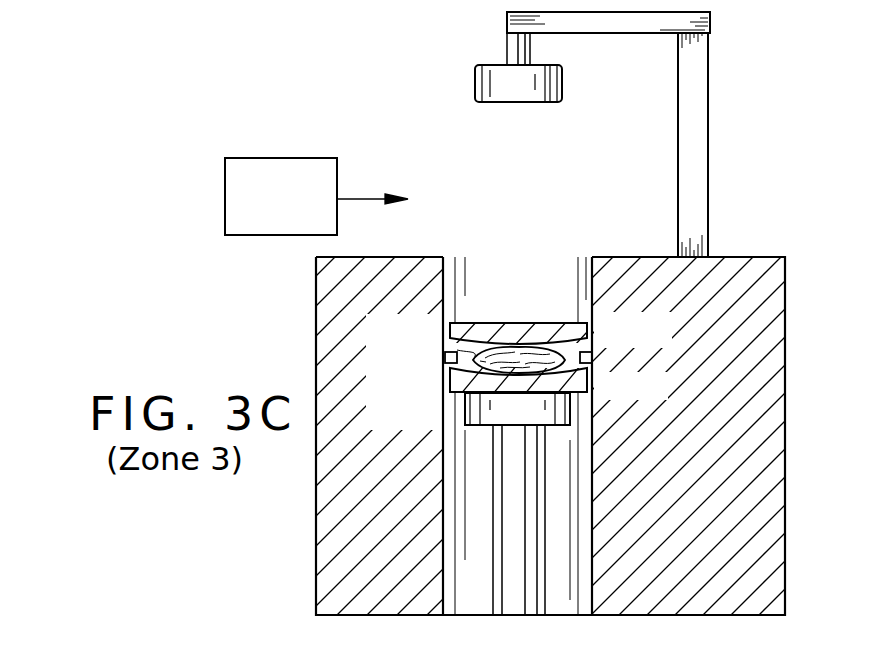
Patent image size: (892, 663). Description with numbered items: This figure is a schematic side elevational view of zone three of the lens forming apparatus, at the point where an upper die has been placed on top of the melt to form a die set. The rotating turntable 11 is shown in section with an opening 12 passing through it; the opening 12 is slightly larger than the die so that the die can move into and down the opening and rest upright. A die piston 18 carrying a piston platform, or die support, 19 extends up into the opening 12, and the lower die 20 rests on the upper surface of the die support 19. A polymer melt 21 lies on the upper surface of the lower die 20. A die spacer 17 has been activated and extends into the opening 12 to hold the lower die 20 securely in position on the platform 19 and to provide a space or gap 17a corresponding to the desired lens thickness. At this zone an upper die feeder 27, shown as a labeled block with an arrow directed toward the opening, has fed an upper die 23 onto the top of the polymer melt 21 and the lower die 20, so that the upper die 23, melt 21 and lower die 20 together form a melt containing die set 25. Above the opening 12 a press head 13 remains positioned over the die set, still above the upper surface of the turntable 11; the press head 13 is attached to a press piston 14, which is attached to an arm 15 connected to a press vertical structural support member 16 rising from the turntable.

The turntable 11 is at (737, 257).
The opening 12 is at (461, 262).
The press head 13 is at (478, 85).
The press piston 14 is at (517, 50).
The arm 15 is at (708, 25).
The press vertical structural support member 16 is at (698, 153).
The die spacer 17 is at (445, 359).
The space or gap 17a is at (462, 353).
The die piston 18 is at (520, 503).
The piston platform (die support) 19 is at (495, 410).
The lower die 20 is at (565, 378).
The polymer melt 21 is at (510, 353).
The upper die 23 is at (532, 333).
The melt containing die set 25 is at (596, 342).
The upper die feeder 27 is at (280, 158).